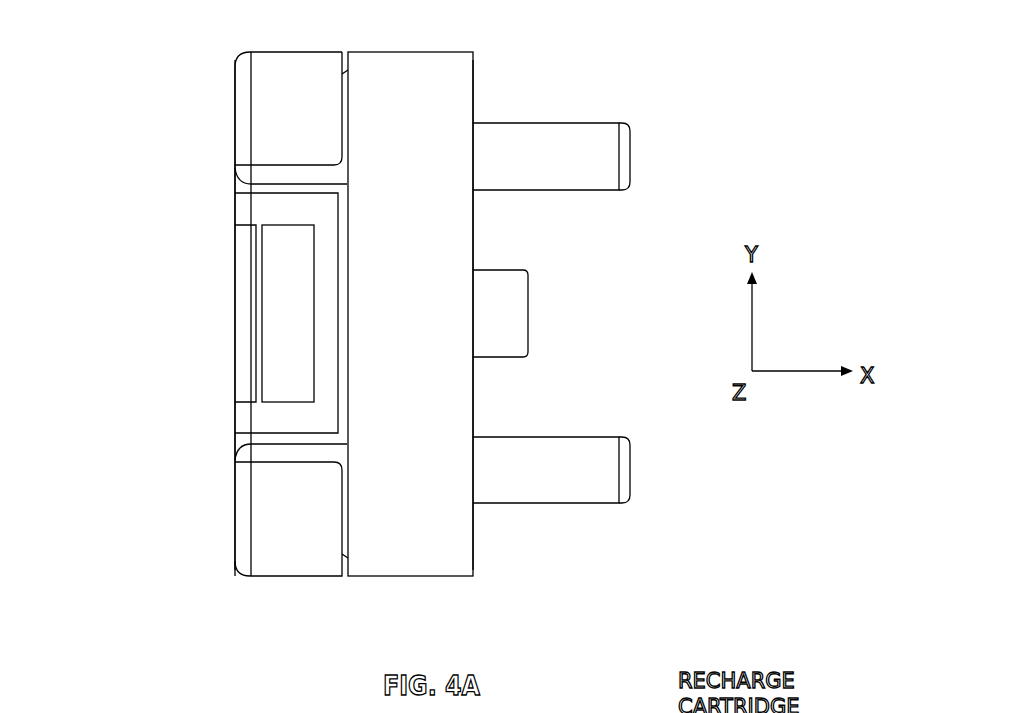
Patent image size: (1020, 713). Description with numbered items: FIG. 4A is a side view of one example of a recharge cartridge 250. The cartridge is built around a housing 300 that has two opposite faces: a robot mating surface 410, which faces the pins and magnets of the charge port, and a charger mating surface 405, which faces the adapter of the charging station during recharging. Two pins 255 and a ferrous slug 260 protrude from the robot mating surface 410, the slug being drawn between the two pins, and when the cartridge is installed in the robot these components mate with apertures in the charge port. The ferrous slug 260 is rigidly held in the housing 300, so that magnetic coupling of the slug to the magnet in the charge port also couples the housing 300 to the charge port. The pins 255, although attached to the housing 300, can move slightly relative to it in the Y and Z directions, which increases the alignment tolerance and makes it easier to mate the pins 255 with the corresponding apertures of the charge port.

The recharge cartridge 250 is at (466, 323).
The pins 255 is at (630, 470).
The ferrous slug 260 is at (585, 330).
The housing 300 is at (407, 576).
The charger mating surface 405 is at (228, 294).
The robot mating surface 410 is at (484, 238).